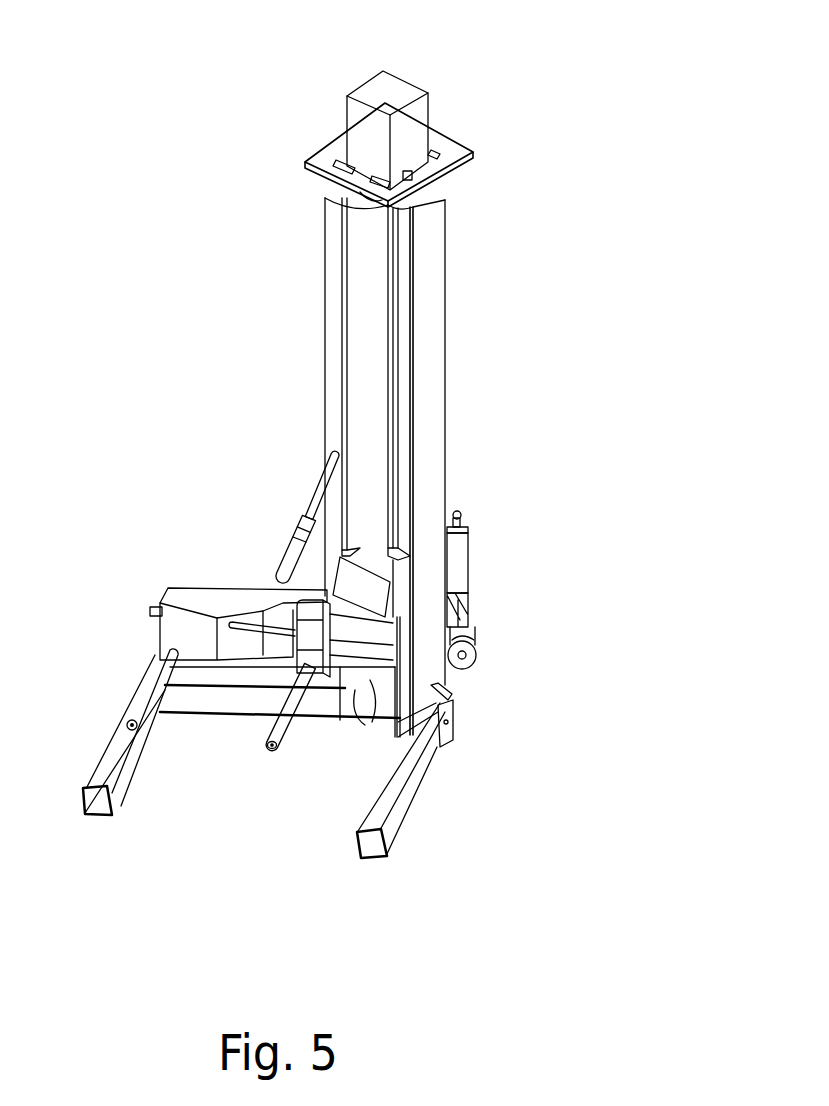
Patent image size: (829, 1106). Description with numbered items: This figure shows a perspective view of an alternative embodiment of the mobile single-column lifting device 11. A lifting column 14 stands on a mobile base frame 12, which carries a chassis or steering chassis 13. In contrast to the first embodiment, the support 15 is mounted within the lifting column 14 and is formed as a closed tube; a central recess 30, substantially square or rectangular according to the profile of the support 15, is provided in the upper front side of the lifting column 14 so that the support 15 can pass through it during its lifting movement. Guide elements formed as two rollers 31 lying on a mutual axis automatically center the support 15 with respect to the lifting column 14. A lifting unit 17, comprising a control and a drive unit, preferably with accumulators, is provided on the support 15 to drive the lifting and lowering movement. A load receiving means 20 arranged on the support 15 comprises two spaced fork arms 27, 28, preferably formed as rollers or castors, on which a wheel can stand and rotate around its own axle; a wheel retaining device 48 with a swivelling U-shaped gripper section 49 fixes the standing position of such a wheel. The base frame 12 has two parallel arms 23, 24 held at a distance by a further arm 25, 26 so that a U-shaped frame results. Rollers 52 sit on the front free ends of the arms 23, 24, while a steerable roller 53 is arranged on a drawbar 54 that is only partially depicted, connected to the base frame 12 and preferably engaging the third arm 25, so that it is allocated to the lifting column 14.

The lifting device 11 is at (222, 321).
The mobile base frame 12 is at (136, 649).
The chassis or steering chassis 13 is at (483, 712).
The lifting column 14 is at (432, 397).
The support 15 is at (393, 93).
The lifting unit 17 is at (462, 471).
The load receiving means 20 is at (171, 570).
The first arm of the base frame 23 is at (102, 755).
The second arm of the base frame 24 is at (418, 790).
The third arm of the base frame 25 is at (450, 693).
The further arm of the base frame 26 is at (210, 715).
The first fork arm 27 is at (142, 700).
The second fork arm 28 is at (293, 722).
The central recess 30 is at (432, 151).
The rollers 31 is at (342, 188).
The wheel retaining device 48 is at (306, 464).
The gripper section 49 is at (269, 539).
The rollers 52 is at (98, 803).
The steerable roller 53 is at (482, 648).
The drawbar 54 is at (487, 566).